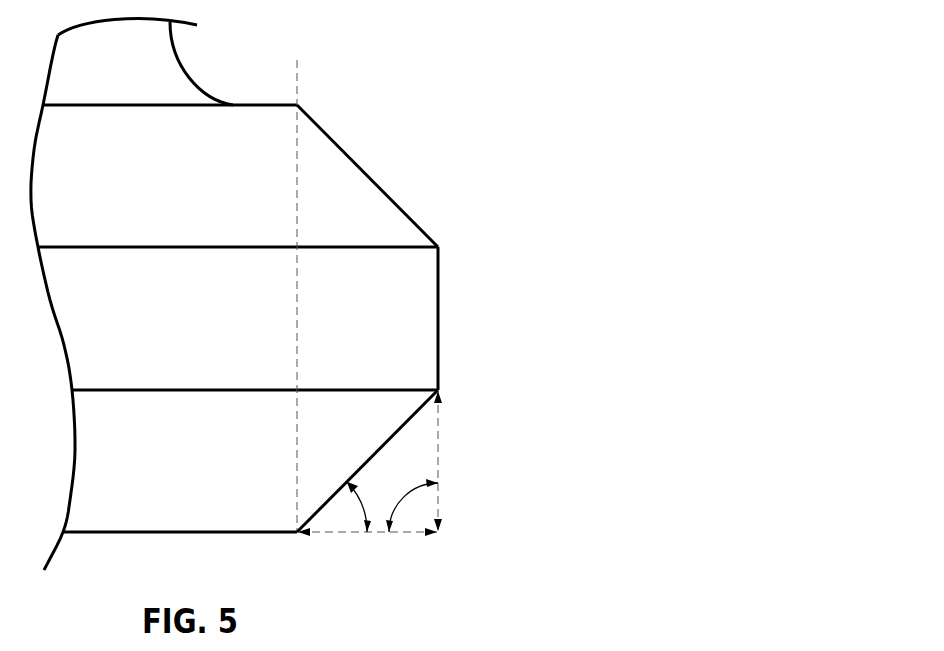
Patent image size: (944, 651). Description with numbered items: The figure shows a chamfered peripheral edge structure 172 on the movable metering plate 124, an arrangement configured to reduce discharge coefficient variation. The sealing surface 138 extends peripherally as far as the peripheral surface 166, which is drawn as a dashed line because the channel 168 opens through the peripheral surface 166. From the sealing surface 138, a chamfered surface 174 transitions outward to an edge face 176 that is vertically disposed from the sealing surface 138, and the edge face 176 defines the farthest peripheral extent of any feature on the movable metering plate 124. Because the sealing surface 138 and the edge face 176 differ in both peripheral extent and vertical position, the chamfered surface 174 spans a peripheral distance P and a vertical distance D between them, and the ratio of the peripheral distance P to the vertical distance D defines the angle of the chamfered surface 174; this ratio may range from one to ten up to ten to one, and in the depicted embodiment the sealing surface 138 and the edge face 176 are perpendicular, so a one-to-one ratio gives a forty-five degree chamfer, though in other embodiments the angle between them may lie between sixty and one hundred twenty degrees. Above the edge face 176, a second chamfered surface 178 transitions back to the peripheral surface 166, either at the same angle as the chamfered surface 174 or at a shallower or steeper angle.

The movable metering plate 124 is at (345, 314).
The sealing surface 138 is at (82, 534).
The peripheral surface 166 is at (298, 78).
The channel 168 is at (226, 33).
The peripheral edge structure 172 is at (478, 318).
The chamfered surface 174 is at (407, 421).
The edge face 176 is at (440, 331).
The second chamfered surface 178 is at (367, 175).
The vertical distance D is at (442, 442).
The peripheral distance P is at (403, 535).